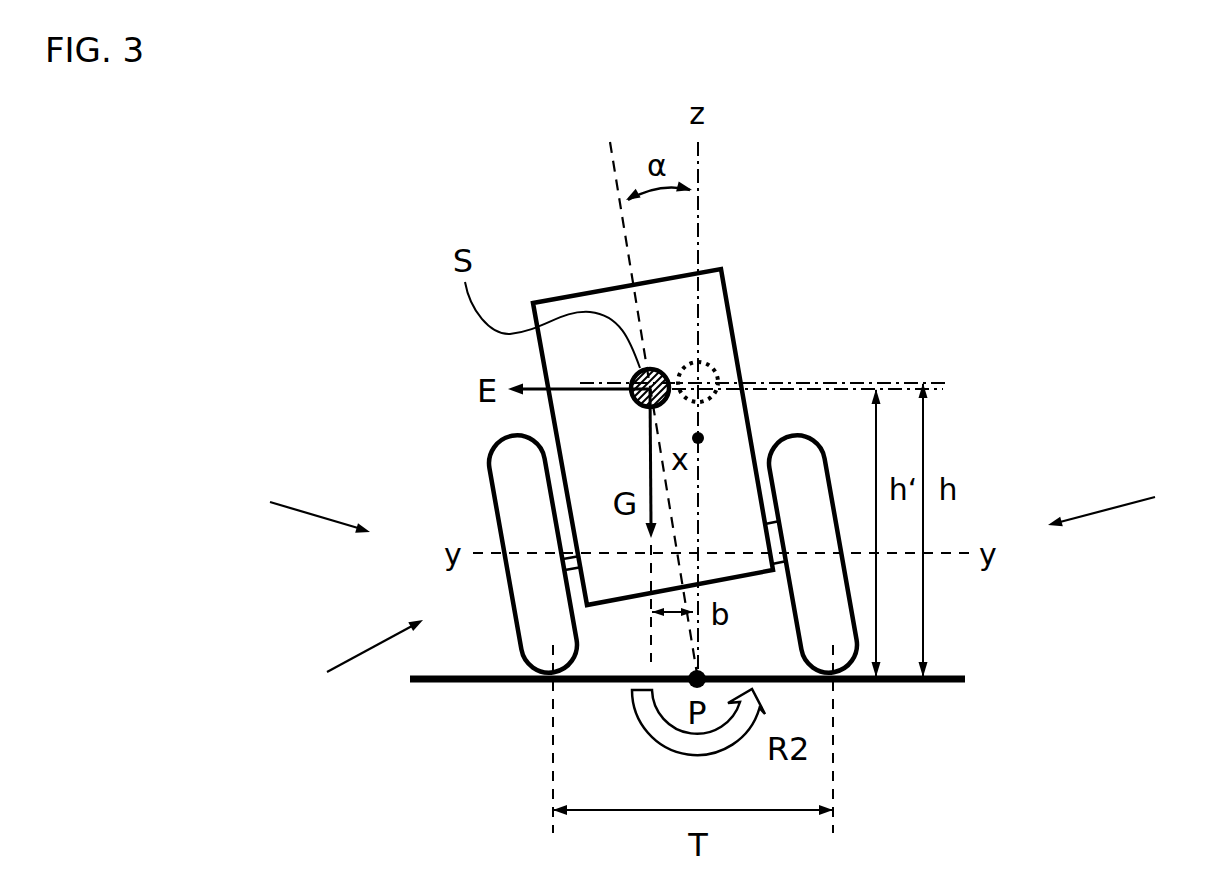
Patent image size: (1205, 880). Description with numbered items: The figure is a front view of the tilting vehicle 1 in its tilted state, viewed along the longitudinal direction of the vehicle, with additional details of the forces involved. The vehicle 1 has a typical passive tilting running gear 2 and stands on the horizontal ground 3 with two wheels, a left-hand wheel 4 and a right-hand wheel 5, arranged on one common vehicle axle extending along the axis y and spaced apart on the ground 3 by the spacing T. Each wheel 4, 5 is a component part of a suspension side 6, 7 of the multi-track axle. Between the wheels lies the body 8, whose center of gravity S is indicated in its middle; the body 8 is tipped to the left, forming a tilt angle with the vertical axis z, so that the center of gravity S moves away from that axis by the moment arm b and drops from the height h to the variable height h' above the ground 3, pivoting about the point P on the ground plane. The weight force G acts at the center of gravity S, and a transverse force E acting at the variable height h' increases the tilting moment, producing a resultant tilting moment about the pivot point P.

The vehicle 1 is at (1036, 291).
The passive tilting running gear 2 is at (359, 659).
The ground 3 is at (443, 735).
The left-hand wheel 4 is at (497, 512).
The right-hand wheel 5 is at (790, 432).
The suspension side 6 is at (305, 506).
The suspension side 7 is at (1115, 499).
The body 8 is at (580, 292).